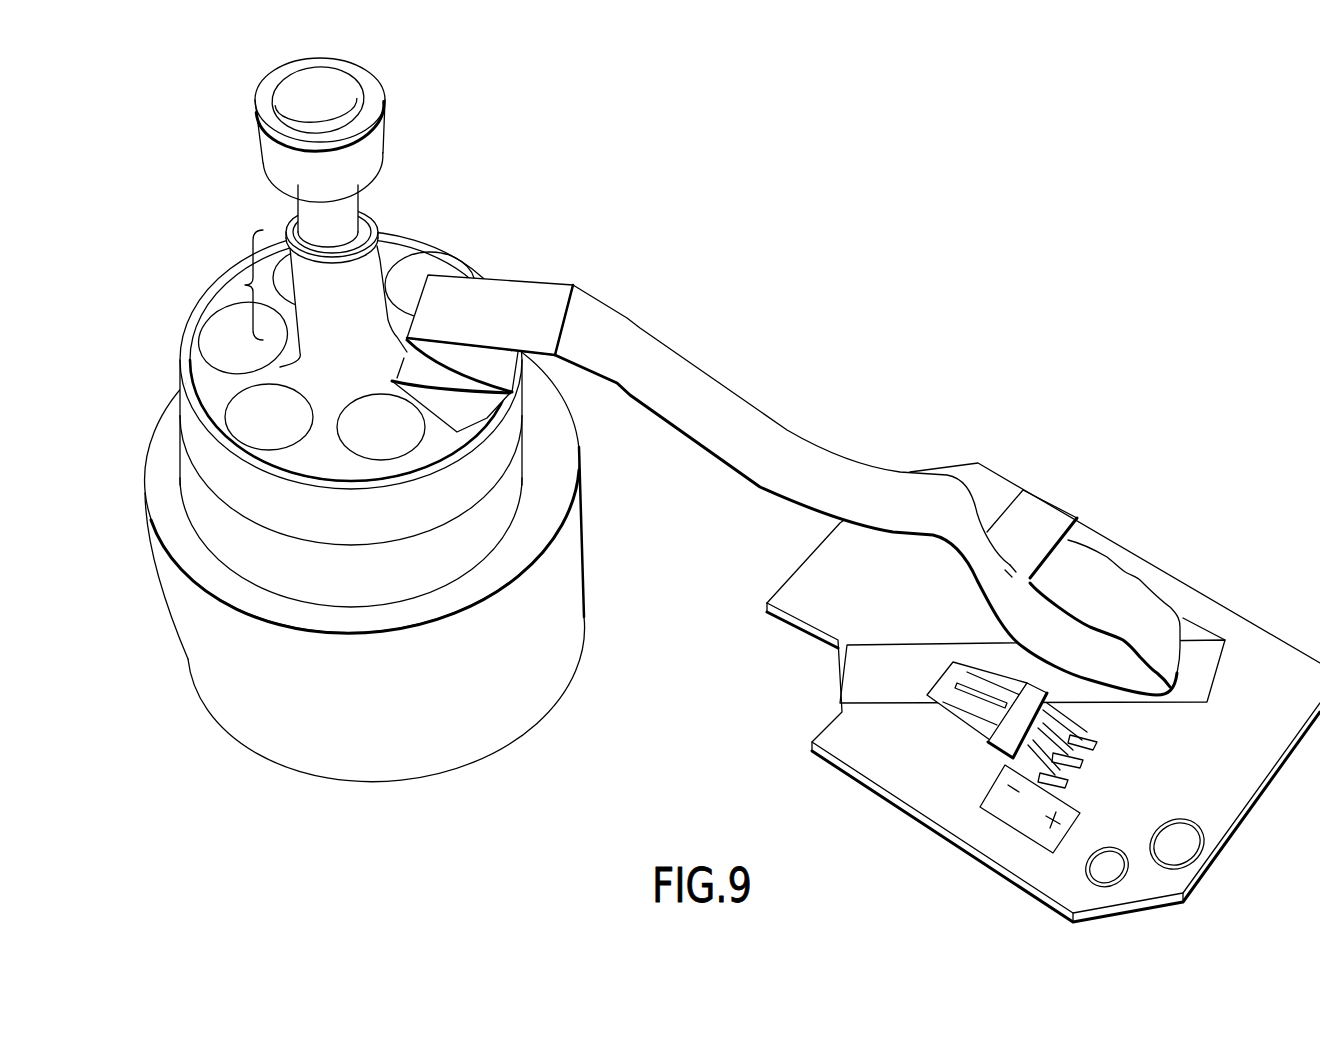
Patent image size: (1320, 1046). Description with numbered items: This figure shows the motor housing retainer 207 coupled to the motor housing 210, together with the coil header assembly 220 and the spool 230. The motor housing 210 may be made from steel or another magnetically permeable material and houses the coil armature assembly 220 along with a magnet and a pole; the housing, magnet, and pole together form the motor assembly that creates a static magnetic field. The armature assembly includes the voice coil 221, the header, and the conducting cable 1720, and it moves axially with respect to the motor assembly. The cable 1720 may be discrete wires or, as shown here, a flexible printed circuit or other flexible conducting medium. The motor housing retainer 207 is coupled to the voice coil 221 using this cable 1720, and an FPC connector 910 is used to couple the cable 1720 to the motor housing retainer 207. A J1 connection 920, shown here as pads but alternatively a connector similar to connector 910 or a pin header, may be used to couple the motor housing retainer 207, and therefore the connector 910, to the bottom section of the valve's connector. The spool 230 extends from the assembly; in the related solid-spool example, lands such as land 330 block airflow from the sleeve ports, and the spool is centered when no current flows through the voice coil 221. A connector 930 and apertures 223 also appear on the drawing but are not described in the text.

The motor housing retainer 207 is at (837, 750).
The motor housing 210 is at (308, 747).
The coil header assembly 220 is at (218, 480).
The voice coil 221 is at (225, 568).
The apertures 223 is at (240, 284).
The spool 230 is at (293, 213).
The land 330 is at (273, 158).
The FPC connector 910 is at (1018, 522).
The J1 connection 920 is at (1020, 833).
The connector 930 is at (965, 722).
The conducting cable 1720 is at (720, 427).